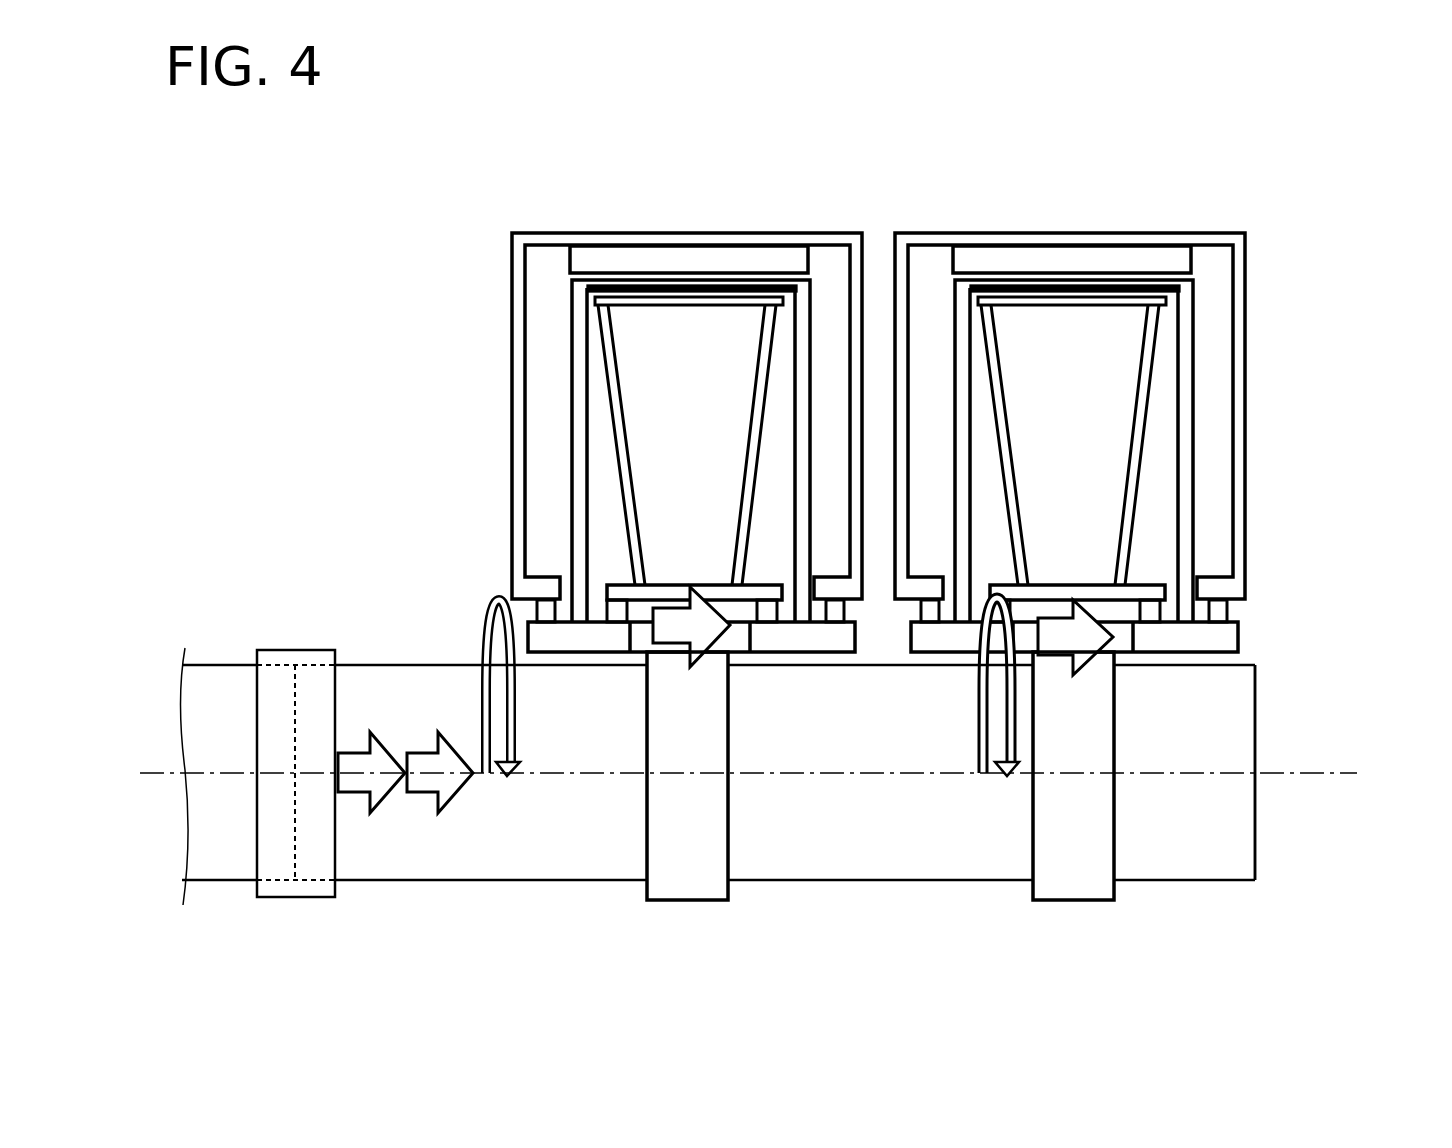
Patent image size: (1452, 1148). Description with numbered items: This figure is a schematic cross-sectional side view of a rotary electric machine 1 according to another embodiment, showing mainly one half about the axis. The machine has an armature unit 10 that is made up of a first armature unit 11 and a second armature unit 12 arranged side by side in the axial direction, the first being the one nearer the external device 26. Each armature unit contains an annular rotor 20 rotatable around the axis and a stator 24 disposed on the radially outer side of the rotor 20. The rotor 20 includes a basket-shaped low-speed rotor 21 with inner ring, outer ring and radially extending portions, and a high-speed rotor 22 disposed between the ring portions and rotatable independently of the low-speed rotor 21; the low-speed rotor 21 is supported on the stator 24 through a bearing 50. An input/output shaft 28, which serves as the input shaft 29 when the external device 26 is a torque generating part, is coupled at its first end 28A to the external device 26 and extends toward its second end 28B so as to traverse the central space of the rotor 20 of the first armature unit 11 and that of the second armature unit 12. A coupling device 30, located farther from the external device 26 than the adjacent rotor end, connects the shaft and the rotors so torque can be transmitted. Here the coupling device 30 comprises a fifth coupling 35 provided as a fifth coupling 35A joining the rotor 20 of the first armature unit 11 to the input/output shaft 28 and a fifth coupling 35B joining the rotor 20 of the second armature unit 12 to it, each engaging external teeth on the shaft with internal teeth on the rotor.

The rotary electric machine 1 is at (1386, 132).
The armature unit 10 is at (1108, 103).
The first armature unit 11 is at (763, 150).
The second armature unit 12 is at (1157, 150).
The rotor 20 is at (793, 188).
The low-speed rotor 21 is at (684, 290).
The high-speed rotor 22 is at (738, 303).
The stator 24 is at (616, 255).
The external device 26 is at (228, 687).
The input/output shaft 28 is at (805, 806).
The input shaft 29 is at (495, 872).
The first end 28A is at (303, 865).
The second end 28B is at (1255, 710).
The coupling device 30 is at (876, 802).
The fifth coupling 35 is at (876, 802).
The fifth coupling 35A is at (702, 842).
The fifth coupling 35B is at (1090, 842).
The bearing 50 is at (545, 607).